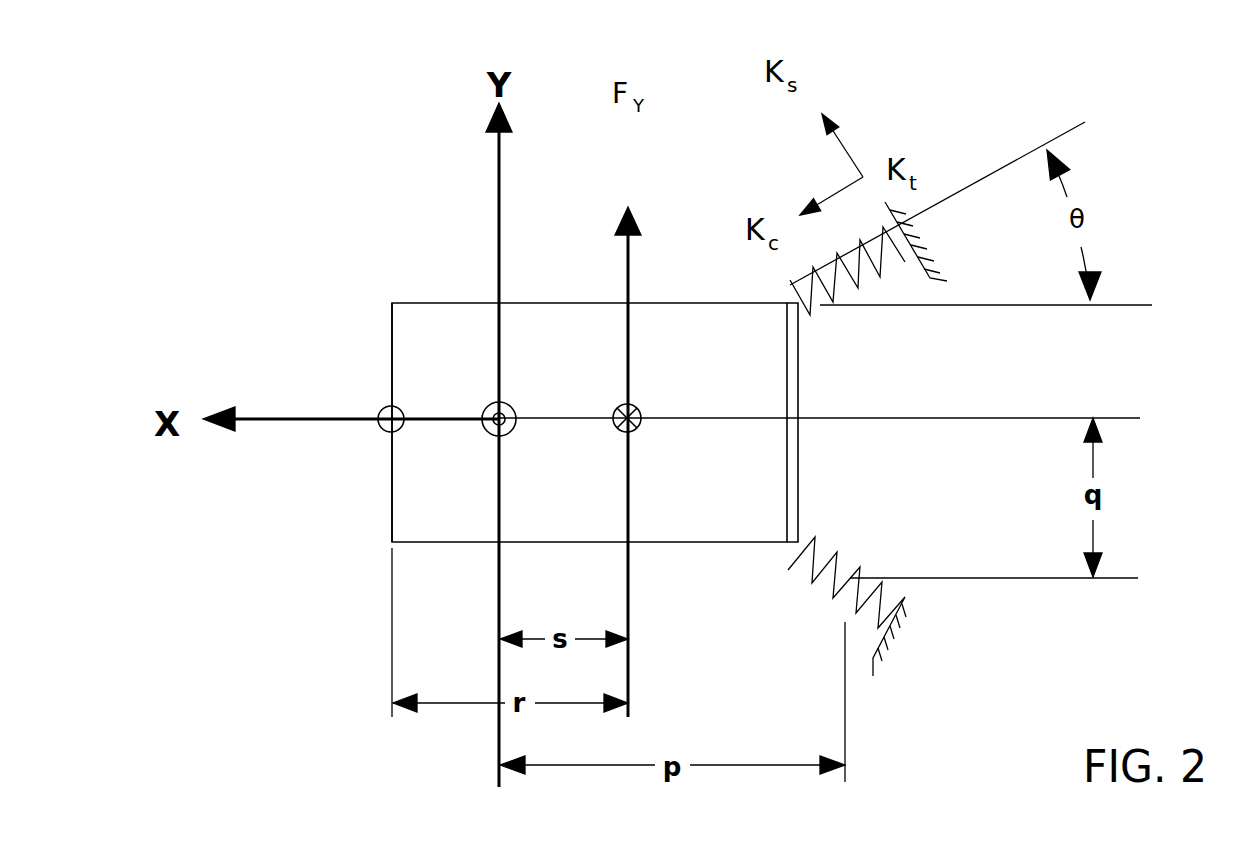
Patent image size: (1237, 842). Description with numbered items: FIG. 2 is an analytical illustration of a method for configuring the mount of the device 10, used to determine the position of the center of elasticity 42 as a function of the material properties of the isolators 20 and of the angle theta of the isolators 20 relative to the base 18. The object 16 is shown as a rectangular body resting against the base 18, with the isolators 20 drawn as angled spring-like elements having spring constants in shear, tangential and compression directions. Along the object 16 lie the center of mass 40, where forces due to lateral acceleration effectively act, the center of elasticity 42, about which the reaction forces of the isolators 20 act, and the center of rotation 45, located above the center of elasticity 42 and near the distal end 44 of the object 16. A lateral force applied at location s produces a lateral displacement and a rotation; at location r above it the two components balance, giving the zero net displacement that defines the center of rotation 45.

The device 10 is at (285, 268).
The object to be mounted 16 is at (407, 510).
The base 18 is at (793, 379).
The isolators 20 is at (870, 273).
The center of mass 40 is at (639, 409).
The center of elasticity 42 is at (489, 404).
The distal end 44 is at (390, 470).
The center of rotation 45 is at (385, 411).